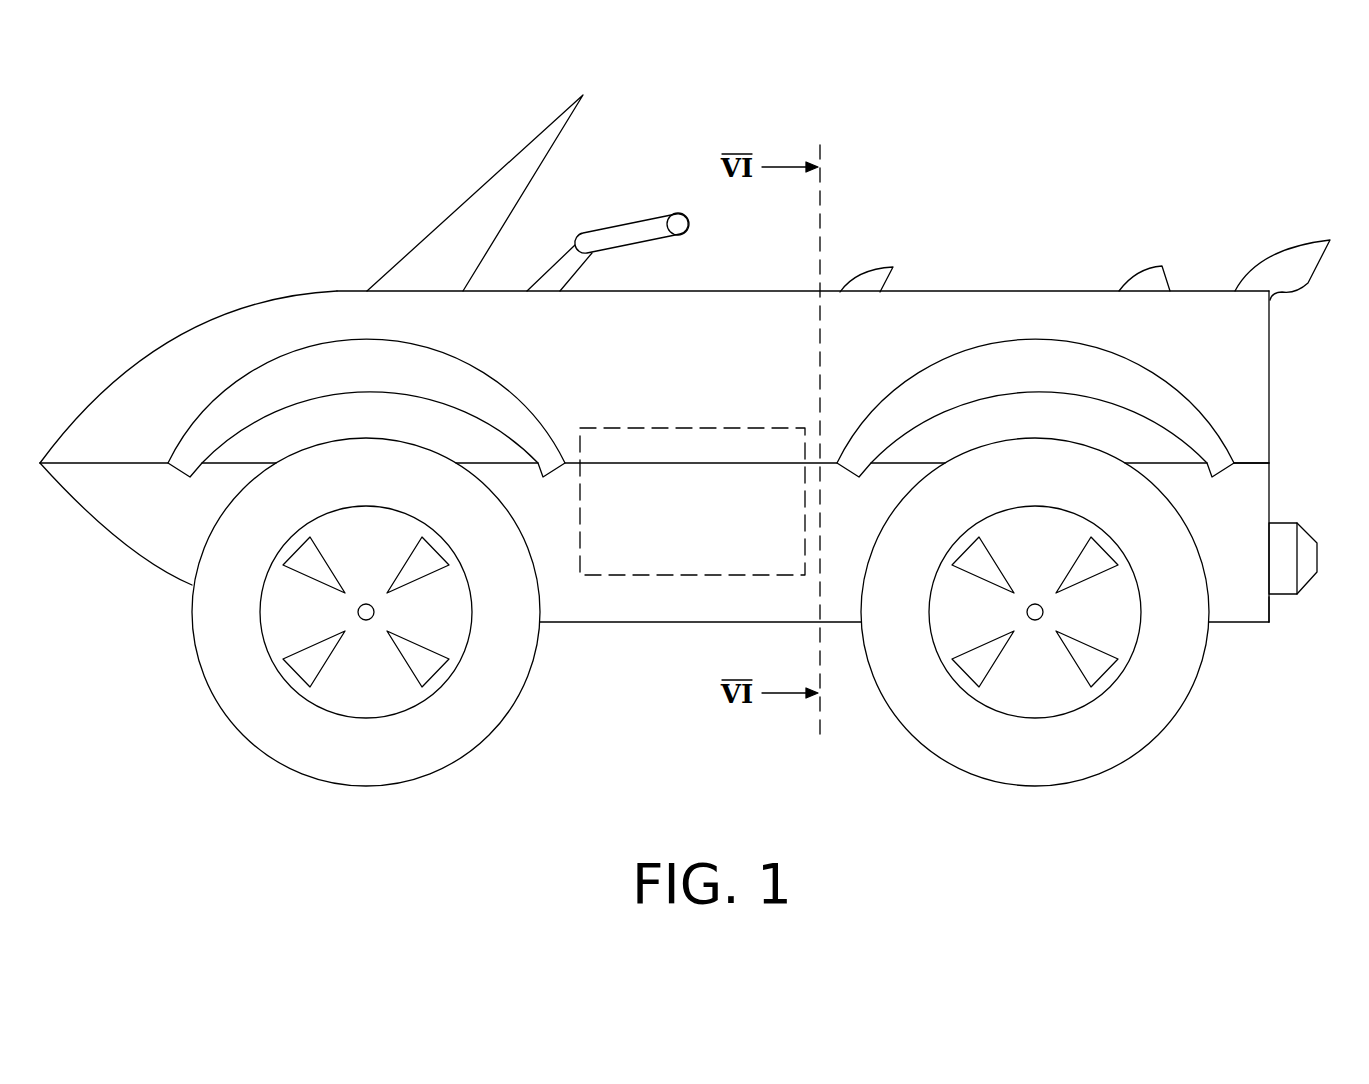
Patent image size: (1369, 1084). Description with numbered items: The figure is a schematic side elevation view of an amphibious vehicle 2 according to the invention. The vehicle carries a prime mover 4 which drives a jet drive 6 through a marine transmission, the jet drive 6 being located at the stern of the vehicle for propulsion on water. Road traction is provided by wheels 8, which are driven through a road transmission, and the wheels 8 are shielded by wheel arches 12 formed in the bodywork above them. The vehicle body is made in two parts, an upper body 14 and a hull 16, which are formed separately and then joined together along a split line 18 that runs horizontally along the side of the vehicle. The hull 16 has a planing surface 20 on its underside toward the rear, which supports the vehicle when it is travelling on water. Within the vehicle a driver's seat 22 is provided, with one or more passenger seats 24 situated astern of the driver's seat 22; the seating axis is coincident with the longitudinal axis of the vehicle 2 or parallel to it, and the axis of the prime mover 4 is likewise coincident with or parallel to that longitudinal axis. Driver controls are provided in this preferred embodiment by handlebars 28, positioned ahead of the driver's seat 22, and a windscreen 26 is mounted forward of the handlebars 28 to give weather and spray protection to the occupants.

The amphibious vehicle 2 is at (1072, 212).
The prime mover 4 is at (687, 421).
The jet drive 6 is at (1318, 554).
The wheels 8 is at (422, 627).
The wheel arches 12 is at (202, 432).
The upper body 14 is at (1270, 362).
The hull 16 is at (1270, 611).
The split line 18 is at (1270, 465).
The planing surface 20 is at (1245, 624).
The driver's seat 22 is at (895, 266).
The passenger seats 24 is at (1173, 265).
The windscreen 26 is at (485, 197).
The handlebars 28 is at (657, 213).